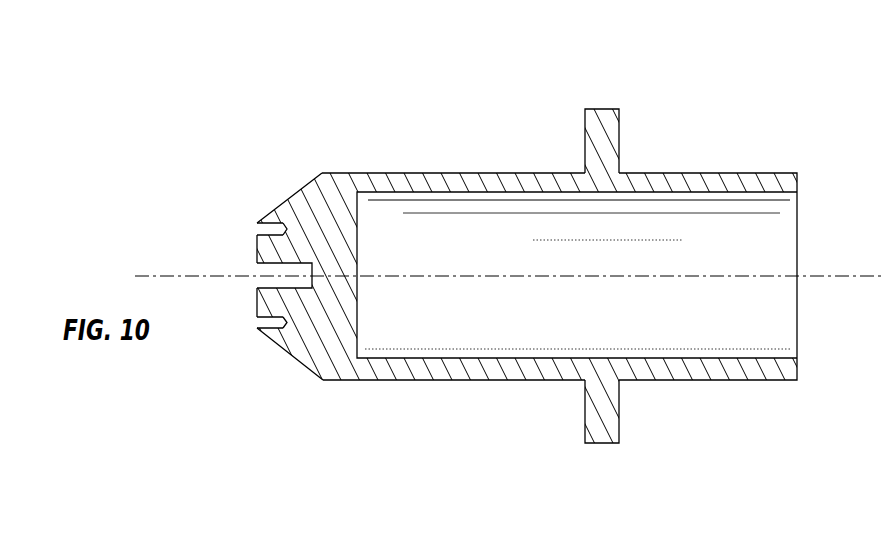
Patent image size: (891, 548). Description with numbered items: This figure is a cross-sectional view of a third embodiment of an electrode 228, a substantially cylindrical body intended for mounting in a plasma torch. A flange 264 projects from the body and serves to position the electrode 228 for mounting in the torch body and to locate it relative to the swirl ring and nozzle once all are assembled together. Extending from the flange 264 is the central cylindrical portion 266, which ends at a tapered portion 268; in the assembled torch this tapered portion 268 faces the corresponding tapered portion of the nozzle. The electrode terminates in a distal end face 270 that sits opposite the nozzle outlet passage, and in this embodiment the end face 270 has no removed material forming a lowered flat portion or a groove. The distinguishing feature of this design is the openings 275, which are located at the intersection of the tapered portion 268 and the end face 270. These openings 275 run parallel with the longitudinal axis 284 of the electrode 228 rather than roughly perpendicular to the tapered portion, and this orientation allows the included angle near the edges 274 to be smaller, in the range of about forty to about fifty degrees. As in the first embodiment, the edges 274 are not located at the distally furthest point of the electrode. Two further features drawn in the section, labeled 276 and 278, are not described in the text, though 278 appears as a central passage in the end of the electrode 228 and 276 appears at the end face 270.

The electrode 228 is at (432, 82).
The flange 264 is at (605, 109).
The central cylindrical portion 266 is at (500, 173).
The tapered portion 268 is at (321, 173).
The end face 270 is at (250, 252).
The edges 274 is at (259, 224).
The openings 275 is at (259, 234).
The end face 276 is at (257, 312).
The central bore 278 is at (268, 282).
The longitudinal axis 284 is at (508, 275).